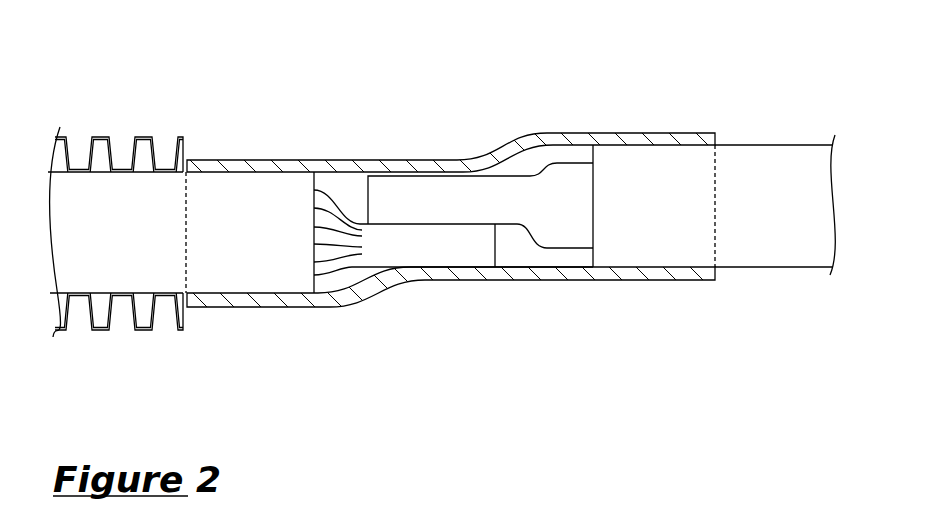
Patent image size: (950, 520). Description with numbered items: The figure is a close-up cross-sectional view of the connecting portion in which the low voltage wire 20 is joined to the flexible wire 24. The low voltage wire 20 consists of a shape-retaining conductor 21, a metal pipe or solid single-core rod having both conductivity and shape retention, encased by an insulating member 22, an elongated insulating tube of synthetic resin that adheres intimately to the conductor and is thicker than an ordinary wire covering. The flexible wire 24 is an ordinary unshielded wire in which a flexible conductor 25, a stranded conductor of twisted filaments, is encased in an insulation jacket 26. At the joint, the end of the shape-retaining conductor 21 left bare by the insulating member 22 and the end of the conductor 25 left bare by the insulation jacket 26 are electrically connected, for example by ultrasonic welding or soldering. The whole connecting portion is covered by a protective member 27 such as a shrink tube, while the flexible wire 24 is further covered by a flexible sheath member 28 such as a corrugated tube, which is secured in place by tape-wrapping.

The low voltage wire 20 is at (748, 160).
The shape-retaining conductor 21 is at (561, 193).
The insulating member 22 is at (787, 160).
The flexible wire 24 is at (240, 195).
The flexible conductor 25 is at (397, 250).
The insulation jacket 26 is at (265, 273).
The protective member 27 is at (462, 165).
The sheath member 28 is at (104, 146).